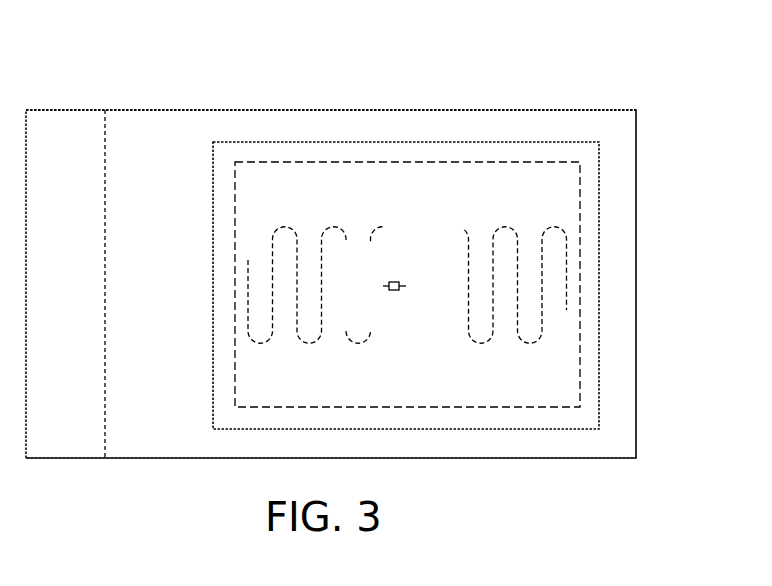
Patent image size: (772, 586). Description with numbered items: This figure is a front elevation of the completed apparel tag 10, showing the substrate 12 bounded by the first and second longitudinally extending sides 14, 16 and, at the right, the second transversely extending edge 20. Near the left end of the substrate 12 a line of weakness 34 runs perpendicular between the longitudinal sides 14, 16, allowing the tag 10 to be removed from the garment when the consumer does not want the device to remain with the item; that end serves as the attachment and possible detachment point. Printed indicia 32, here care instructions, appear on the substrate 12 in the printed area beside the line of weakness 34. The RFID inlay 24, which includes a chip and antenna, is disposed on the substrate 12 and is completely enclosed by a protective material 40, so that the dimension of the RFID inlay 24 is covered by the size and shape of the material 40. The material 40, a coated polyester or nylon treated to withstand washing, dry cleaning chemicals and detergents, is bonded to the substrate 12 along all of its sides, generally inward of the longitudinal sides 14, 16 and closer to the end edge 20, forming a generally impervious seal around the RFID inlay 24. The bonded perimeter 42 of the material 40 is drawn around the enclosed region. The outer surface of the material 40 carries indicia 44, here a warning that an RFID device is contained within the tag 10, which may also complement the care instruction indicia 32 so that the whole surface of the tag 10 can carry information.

The apparel tag 10 is at (365, 261).
The substrate 12 is at (152, 117).
The first longitudinally extending side 14 is at (257, 110).
The second longitudinally extending side 16 is at (188, 459).
The second transversely extending edge 20 is at (636, 270).
The RFID inlay 24 is at (563, 360).
The printed indicia 32 is at (156, 371).
The line of weakness 34 is at (102, 441).
The material 40 is at (593, 411).
The pocket seams 42 is at (406, 141).
The indicia 44 is at (342, 327).